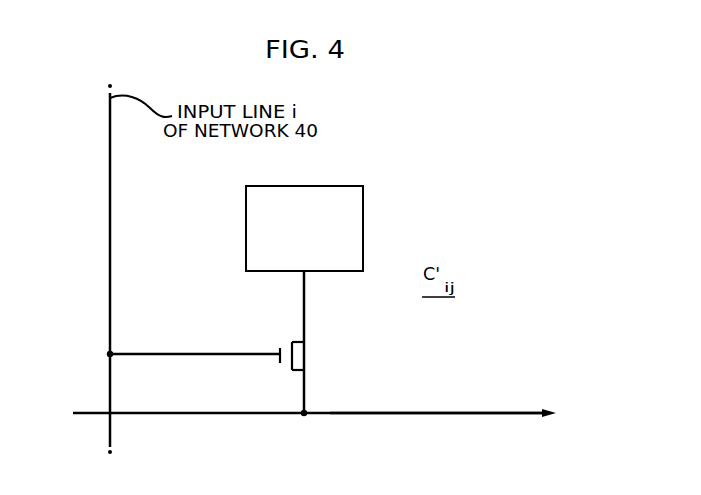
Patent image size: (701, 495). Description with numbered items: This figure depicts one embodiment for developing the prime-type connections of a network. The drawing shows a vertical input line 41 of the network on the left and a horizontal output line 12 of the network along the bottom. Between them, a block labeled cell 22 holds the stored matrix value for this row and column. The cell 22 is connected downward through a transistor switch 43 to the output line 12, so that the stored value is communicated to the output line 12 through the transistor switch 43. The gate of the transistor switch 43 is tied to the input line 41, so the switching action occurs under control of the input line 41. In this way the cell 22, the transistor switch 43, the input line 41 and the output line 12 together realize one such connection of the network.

The cell 22 is at (246, 232).
The input line 41 is at (112, 296).
The transistor switch 43 is at (305, 343).
The output line 12 is at (390, 416).